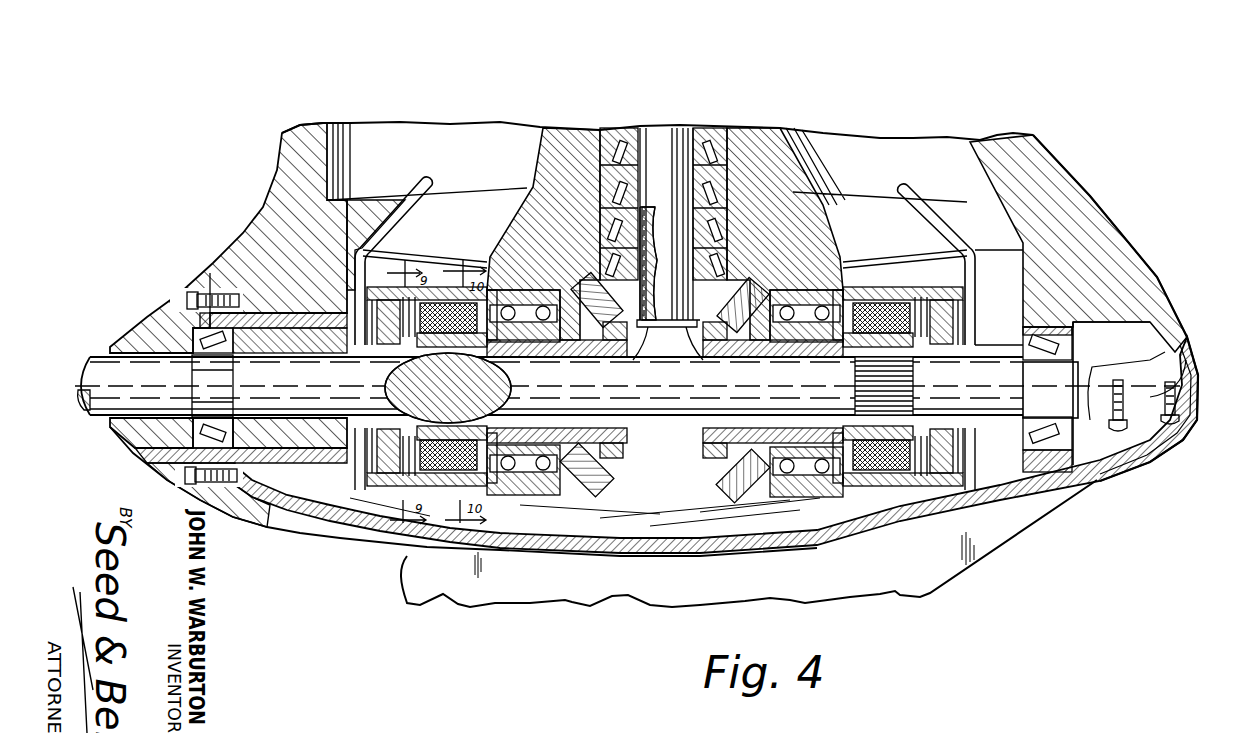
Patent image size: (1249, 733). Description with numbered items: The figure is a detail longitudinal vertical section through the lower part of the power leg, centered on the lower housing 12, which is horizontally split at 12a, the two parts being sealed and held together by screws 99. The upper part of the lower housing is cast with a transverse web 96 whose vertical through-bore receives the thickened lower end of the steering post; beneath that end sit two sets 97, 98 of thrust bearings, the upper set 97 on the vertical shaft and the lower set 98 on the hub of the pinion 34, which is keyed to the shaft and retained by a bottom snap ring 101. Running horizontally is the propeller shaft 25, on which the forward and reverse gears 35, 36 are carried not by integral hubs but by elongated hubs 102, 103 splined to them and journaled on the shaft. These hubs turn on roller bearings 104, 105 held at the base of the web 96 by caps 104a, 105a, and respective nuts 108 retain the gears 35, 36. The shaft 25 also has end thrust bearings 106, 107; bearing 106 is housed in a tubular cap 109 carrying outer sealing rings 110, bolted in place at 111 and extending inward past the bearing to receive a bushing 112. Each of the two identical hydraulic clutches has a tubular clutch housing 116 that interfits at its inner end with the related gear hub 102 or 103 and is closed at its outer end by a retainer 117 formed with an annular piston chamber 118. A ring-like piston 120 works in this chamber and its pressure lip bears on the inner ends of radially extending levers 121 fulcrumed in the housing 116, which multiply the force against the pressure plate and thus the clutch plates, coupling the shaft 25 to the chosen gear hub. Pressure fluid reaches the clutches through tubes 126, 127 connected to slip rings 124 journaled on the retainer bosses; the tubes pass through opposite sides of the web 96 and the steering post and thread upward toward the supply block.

The lower housing 12 is at (1118, 250).
The horizontal split 12a is at (1150, 397).
The propeller shaft 25 is at (333, 385).
The pinion 34 is at (697, 330).
The forward gear 35 is at (583, 480).
The reverse gear 36 is at (735, 470).
The transverse web 96 is at (560, 160).
The upper thrust bearing set 97 is at (727, 212).
The lower thrust bearing set 98 is at (727, 258).
The screws 99 is at (1130, 428).
The bottom snap ring 101 is at (672, 345).
The forward gear hub 102 is at (616, 436).
The reverse gear hub 103 is at (703, 436).
The roller bearing 104 is at (512, 292).
The bearing cap 104a is at (528, 497).
The roller bearing 105 is at (812, 292).
The bearing cap 105a is at (800, 500).
The end thrust bearing 106 is at (135, 455).
The end thrust bearing 107 is at (1025, 462).
The nuts 108 is at (622, 335).
The tubular cap 109 is at (133, 337).
The sealing rings 110 is at (118, 432).
The bolts 111 is at (205, 296).
The bushing 112 is at (277, 448).
The clutch housing 116 is at (437, 290).
The retainer 117 is at (970, 305).
The piston chamber 118 is at (383, 477).
The piston 120 is at (363, 448).
The levers 121 is at (915, 475).
The slip rings 124 is at (978, 345).
The tube 126 is at (423, 182).
The tube 127 is at (920, 200).